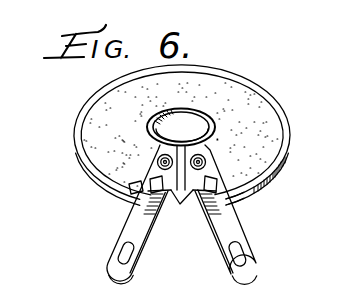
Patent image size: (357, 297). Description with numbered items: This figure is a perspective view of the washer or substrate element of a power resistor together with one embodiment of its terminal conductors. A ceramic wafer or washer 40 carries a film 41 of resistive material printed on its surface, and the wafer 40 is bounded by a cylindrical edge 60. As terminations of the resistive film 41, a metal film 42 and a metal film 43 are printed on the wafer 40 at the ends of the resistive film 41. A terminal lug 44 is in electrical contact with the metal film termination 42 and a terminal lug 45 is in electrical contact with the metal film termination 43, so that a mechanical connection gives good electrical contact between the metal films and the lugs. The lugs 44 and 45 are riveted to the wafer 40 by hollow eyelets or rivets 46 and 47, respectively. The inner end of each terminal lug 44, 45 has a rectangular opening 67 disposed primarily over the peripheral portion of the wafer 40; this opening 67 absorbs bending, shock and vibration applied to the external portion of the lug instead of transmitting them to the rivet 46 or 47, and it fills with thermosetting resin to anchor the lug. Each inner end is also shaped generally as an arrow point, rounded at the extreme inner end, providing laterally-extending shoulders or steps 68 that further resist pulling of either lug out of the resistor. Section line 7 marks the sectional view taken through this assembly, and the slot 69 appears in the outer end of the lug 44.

The section line 7- 7 is at (180, 131).
The wafer 40 is at (78, 160).
The film of resistive material 41 is at (100, 105).
The metal film 42 is at (129, 189).
The metal film 43 is at (224, 140).
The terminal lug 44 is at (145, 241).
The terminal lug 45 is at (228, 248).
The hollow eyelet or rivet 46 is at (157, 161).
The hollow eyelet or rivet 47 is at (208, 158).
The cylindrical edge 60 is at (267, 177).
The rectangular opening 67 is at (199, 205).
The laterally-extending shoulders 68 is at (236, 196).
The slot in left arm 69 is at (117, 273).